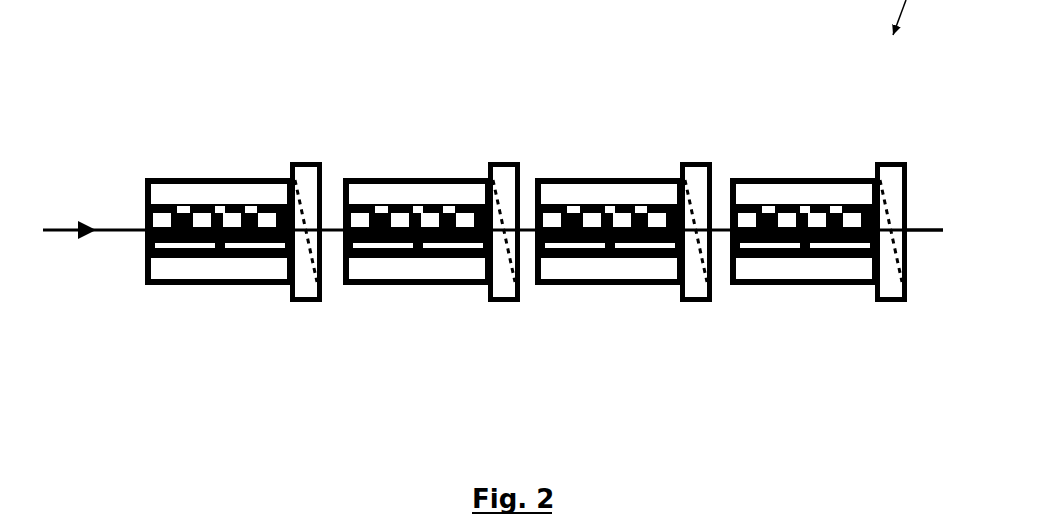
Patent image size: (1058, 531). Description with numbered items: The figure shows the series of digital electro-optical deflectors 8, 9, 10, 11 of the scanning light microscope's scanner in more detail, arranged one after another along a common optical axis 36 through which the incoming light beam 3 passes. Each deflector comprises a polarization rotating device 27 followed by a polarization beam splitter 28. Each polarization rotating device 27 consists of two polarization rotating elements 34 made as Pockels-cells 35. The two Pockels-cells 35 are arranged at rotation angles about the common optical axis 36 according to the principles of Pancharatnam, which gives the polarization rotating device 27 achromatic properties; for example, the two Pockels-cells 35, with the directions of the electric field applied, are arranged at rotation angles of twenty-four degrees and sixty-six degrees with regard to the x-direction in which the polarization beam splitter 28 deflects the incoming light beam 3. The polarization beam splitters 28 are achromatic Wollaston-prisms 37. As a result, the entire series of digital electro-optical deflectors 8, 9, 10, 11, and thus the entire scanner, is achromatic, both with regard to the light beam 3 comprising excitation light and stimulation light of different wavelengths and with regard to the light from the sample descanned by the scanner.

The light beam 3 is at (55, 228).
The digital electro-optical deflector 8 is at (160, 287).
The digital electro-optical deflector 9 is at (367, 287).
The digital electro-optical deflector 10 is at (578, 287).
The digital electro-optical deflector 11 is at (772, 287).
The polarization rotating device 27 is at (218, 287).
The polarization beam splitter 28 is at (592, 284).
The achromatic Wollaston-prism 37 is at (300, 303).
The polarization rotating element 34 is at (513, 162).
The Pockels-cell 35 is at (185, 198).
The optical axis 36 is at (937, 222).